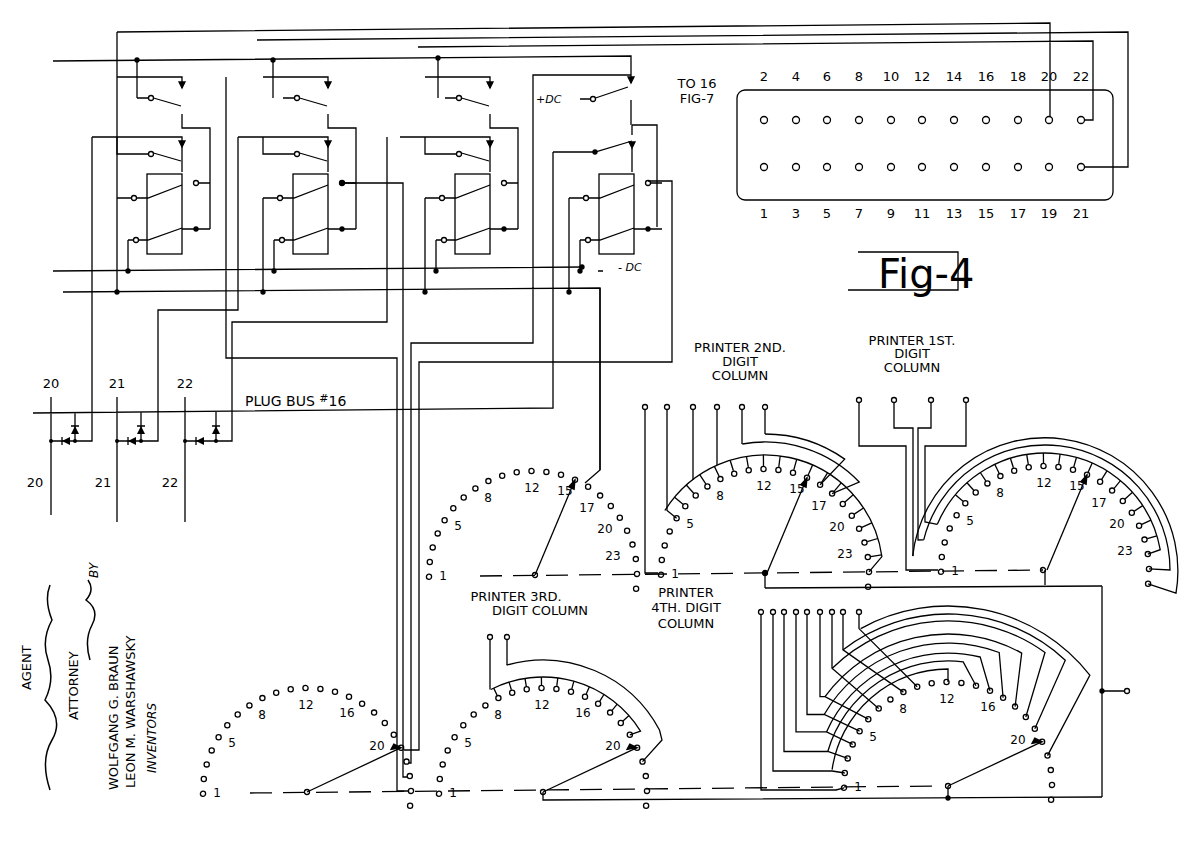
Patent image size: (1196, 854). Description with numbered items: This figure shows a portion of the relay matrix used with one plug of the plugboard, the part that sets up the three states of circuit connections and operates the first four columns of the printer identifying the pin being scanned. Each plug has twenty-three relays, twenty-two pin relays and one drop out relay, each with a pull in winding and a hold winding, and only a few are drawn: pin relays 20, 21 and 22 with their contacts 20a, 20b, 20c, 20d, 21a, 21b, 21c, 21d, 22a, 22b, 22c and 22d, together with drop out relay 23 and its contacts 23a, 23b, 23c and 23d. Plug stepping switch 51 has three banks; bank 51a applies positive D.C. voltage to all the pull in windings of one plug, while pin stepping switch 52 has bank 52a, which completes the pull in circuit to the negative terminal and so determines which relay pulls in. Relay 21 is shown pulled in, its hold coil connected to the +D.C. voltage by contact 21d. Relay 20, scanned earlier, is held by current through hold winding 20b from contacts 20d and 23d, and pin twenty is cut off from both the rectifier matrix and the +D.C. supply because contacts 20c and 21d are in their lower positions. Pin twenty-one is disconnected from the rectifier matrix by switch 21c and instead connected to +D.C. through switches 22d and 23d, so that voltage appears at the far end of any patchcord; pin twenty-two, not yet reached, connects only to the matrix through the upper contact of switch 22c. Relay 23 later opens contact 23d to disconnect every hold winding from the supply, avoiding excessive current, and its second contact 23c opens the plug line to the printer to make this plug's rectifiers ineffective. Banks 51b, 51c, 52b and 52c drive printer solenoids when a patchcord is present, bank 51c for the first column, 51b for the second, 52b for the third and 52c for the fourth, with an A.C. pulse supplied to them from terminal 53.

The relay 20 is at (149, 143).
The relay contact 20a is at (136, 186).
The hold winding 20b is at (170, 240).
The contact 20c is at (153, 148).
The contact 20d is at (178, 106).
The relay 21 is at (350, 475).
The relay contact 21a is at (282, 186).
The relay contact 21b is at (316, 240).
The switch 21c is at (299, 148).
The contact 21d is at (324, 106).
The relay 22 is at (472, 214).
The relay contact 22a is at (444, 186).
The relay contact 22b is at (478, 240).
The switch 22c is at (461, 148).
The switch 22d is at (486, 106).
The drop out relay 23 is at (538, 462).
The relay contact 23a is at (588, 186).
The relay contact 23b is at (622, 240).
The contact 23c is at (596, 149).
The contact 23d is at (630, 106).
The plug stepping switch 51 is at (1052, 425).
The bank 51a is at (532, 439).
The bank 51b is at (761, 486).
The bank 51c is at (1016, 484).
The pin stepping switch 52 is at (716, 755).
The bank 52a is at (306, 746).
The bank 52b is at (549, 710).
The bank 52c is at (923, 695).
The terminal 53 is at (1165, 700).